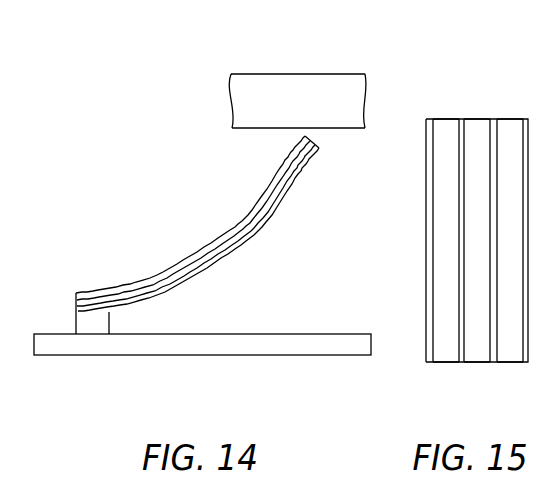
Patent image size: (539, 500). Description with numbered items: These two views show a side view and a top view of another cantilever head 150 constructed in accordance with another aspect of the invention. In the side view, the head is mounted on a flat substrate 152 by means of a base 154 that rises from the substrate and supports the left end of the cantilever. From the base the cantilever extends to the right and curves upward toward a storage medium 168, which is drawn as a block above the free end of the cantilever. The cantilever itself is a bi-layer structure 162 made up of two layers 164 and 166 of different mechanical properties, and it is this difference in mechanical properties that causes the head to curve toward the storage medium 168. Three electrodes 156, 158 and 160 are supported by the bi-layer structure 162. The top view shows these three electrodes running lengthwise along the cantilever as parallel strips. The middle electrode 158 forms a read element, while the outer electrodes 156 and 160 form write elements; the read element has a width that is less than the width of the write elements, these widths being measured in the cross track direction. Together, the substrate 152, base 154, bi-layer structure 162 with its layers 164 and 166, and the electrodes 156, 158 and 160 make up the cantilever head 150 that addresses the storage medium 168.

In FIG. 14, the cantilever head 150 is at (150, 208).
In FIG. 14, the substrate 152 is at (290, 347).
In FIG. 14, the base 154 is at (75, 328).
In FIG. 15, the electrode 156 is at (445, 125).
In FIG. 15, the electrode 158 is at (477, 125).
In FIG. 14, the electrode 160 is at (142, 281).
In FIG. 15, the electrode 160 is at (507, 125).
In FIG. 14, the bi-layer structure 162 is at (282, 198).
In FIG. 14, the layer 164 is at (245, 230).
In FIG. 15, the layer 164 is at (430, 125).
In FIG. 14, the layer 166 is at (217, 266).
In FIG. 14, the storage medium 168 is at (285, 87).